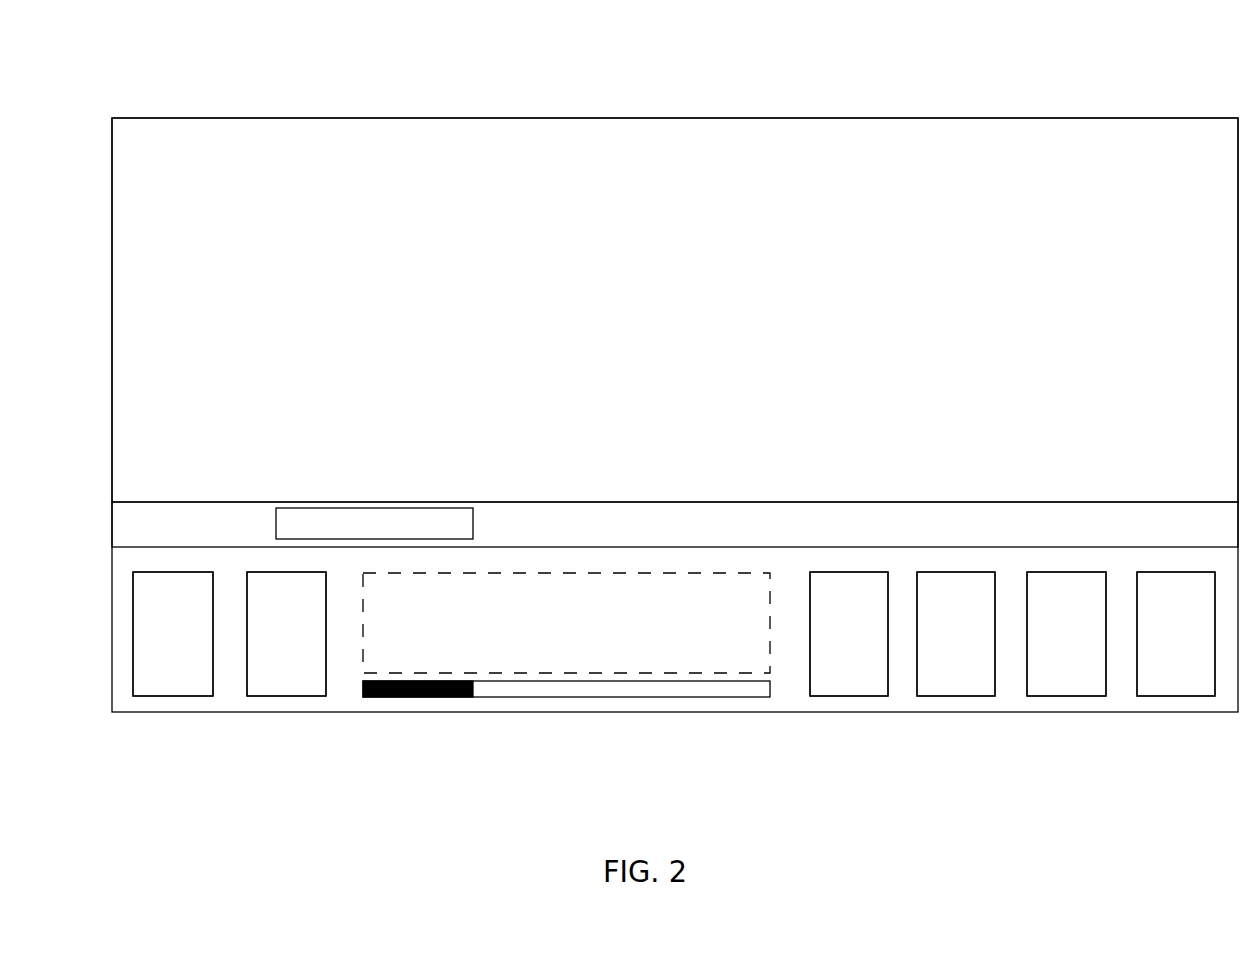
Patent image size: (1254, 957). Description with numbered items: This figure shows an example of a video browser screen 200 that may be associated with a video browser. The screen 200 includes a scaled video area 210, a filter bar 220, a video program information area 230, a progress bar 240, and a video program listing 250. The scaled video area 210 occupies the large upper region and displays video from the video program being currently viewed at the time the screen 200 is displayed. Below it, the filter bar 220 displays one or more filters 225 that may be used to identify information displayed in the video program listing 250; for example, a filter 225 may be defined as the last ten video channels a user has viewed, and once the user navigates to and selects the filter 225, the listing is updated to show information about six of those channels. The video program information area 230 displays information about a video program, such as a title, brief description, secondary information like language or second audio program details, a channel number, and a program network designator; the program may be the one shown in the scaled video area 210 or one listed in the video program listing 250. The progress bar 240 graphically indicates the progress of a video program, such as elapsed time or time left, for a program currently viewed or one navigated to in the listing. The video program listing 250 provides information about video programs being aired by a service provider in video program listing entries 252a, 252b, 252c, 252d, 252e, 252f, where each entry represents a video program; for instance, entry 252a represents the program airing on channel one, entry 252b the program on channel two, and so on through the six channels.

The screen 200 is at (175, 84).
The scaled video area 210 is at (929, 138).
The filter bar 220 is at (963, 517).
The filter 225 is at (437, 522).
The video program information area 230 is at (603, 597).
The progress bar 240 is at (527, 688).
The video program listing 250 is at (127, 690).
The video program listing entry 252a is at (154, 646).
The video program listing entry 252b is at (268, 646).
The video program listing entry 252c is at (830, 646).
The video program listing entry 252d is at (938, 646).
The video program listing entry 252e is at (1047, 646).
The video program listing entry 252f is at (1158, 646).